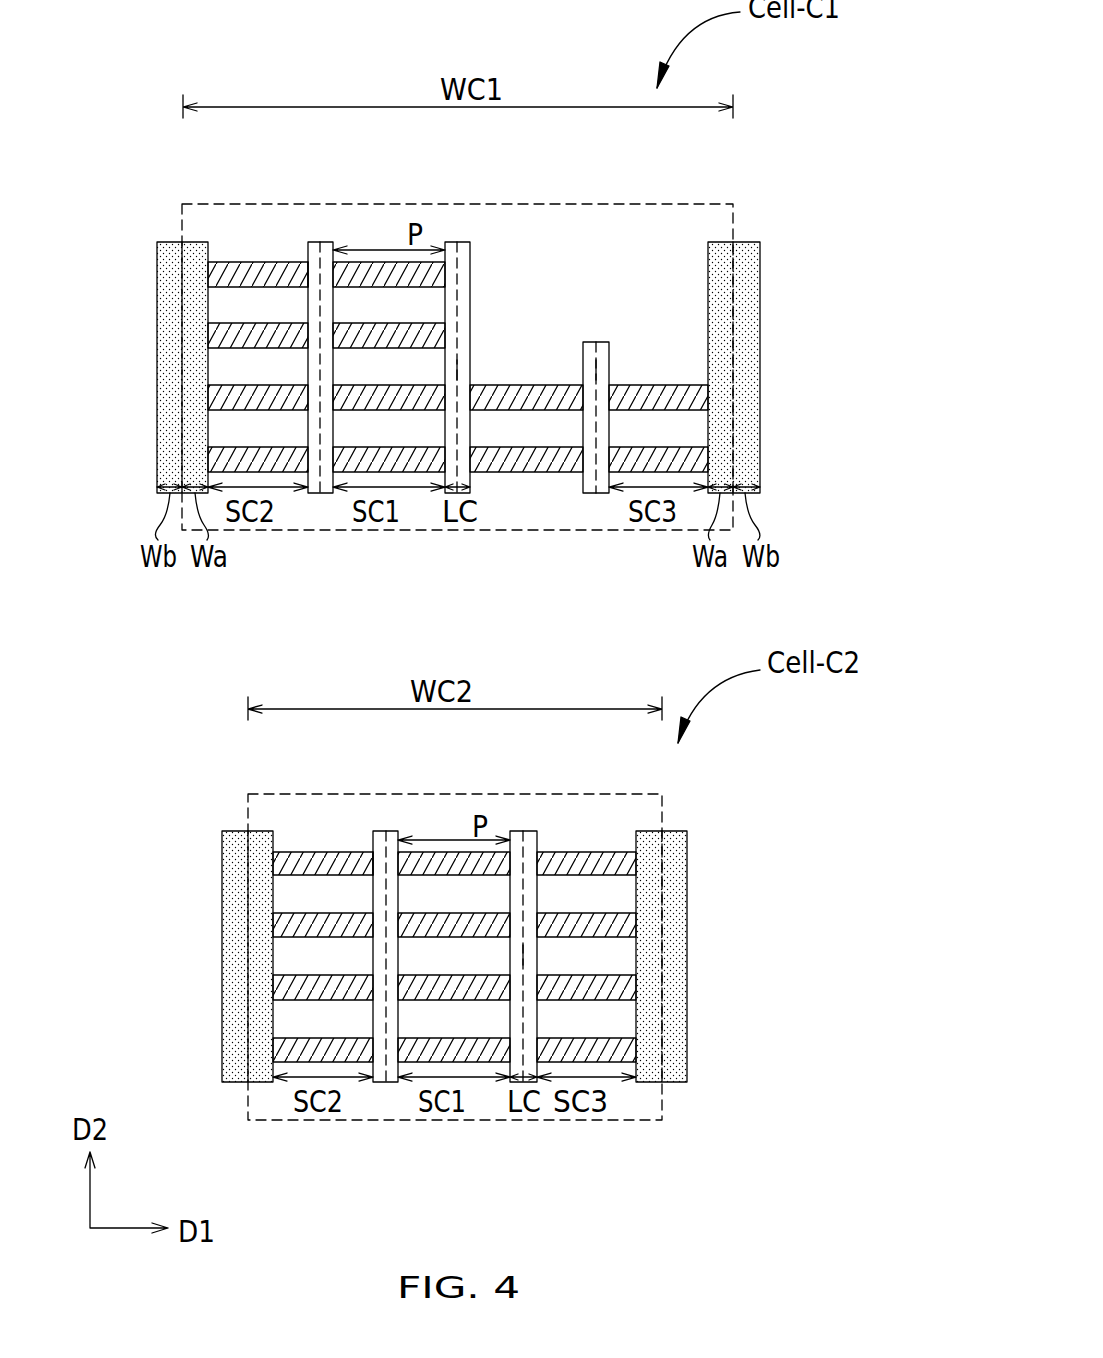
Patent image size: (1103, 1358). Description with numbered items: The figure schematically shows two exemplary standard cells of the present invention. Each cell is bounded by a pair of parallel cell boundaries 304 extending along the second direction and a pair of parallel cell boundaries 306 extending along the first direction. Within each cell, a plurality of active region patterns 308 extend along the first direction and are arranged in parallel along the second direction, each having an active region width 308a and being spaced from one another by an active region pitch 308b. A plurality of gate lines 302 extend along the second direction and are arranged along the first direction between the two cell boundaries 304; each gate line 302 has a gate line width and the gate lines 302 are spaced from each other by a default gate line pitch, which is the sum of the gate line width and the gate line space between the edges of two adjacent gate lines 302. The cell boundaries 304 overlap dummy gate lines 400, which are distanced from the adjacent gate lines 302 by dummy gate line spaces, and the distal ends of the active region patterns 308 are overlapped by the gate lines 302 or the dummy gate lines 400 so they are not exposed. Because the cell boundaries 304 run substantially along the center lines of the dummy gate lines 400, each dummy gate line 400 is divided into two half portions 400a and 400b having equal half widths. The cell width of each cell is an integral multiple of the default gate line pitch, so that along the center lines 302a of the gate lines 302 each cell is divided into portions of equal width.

The gate lines 302 is at (320, 242).
The center lines of the gate lines 302a is at (311, 265).
The cell boundaries 304 is at (182, 222).
The cell boundaries 306 is at (575, 204).
The active region patterns 308 is at (430, 325).
The active region width 308a is at (304, 311).
The active region pitch 308b is at (368, 323).
The dummy gate lines 400 is at (459, 662).
The half portion 400a is at (195, 372).
The half portion 400b is at (170, 330).